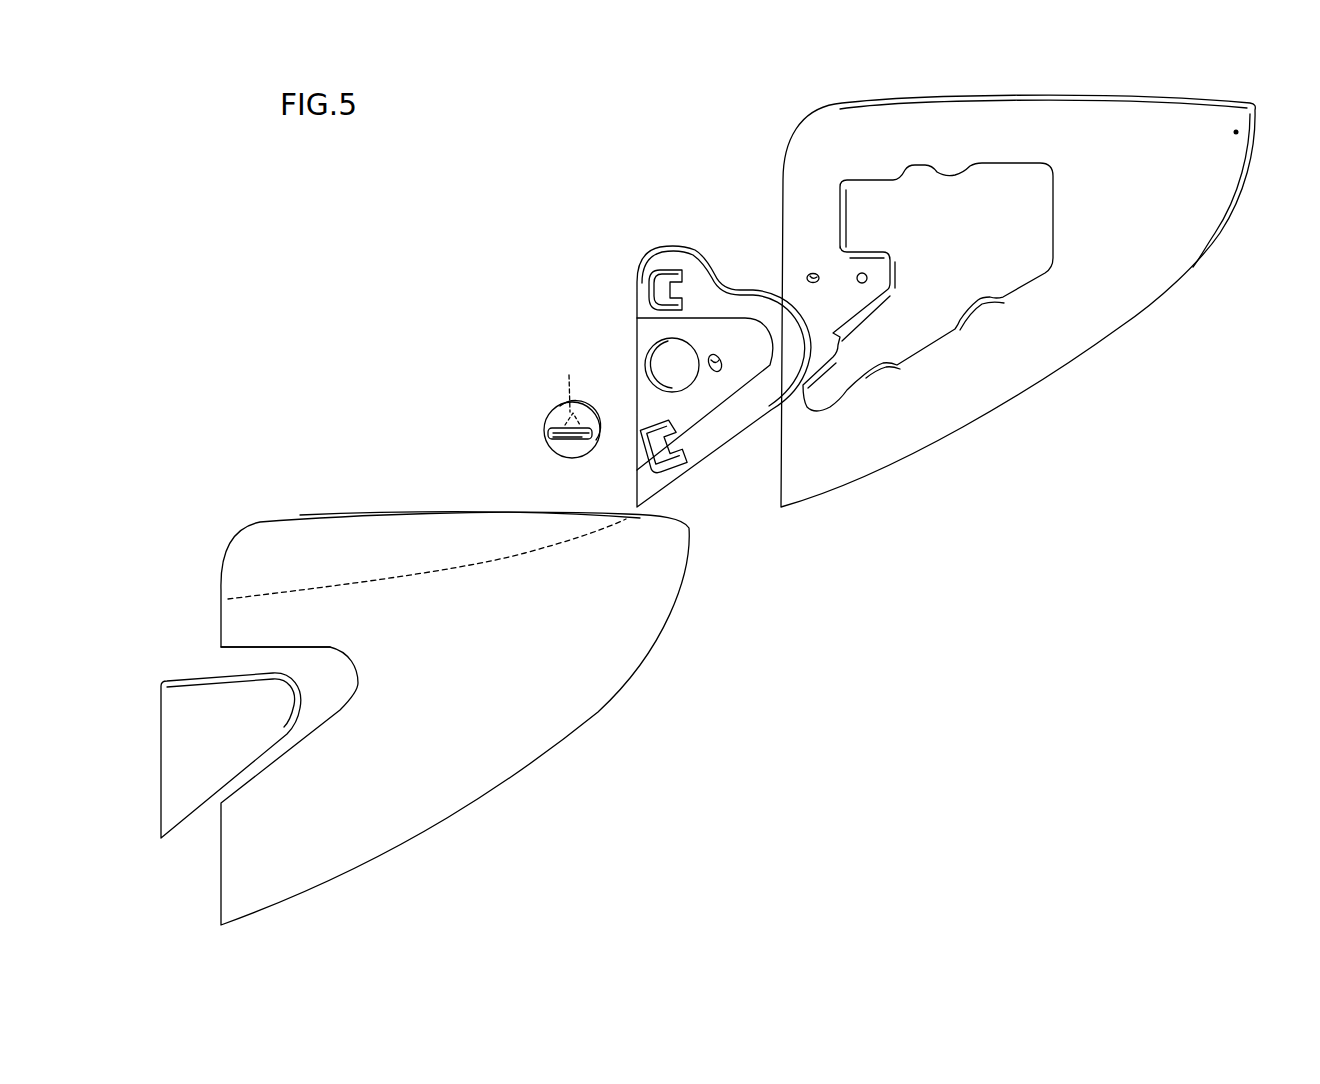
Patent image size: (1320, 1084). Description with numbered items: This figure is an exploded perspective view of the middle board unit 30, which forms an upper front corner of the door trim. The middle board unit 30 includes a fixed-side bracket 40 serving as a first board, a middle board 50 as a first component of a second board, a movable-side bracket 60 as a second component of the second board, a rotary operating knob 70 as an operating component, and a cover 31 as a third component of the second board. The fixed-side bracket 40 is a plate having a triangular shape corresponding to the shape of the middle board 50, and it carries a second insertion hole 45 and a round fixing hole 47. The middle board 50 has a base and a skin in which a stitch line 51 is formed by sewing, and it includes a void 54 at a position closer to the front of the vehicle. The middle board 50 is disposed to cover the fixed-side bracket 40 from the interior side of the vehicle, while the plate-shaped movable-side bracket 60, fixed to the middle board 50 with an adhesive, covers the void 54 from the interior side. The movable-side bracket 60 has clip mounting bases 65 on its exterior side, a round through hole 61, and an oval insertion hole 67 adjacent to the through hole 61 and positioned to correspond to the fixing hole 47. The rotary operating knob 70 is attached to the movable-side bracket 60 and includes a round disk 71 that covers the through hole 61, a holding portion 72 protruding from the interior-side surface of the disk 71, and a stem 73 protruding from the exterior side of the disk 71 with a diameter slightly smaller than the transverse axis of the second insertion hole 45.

The middle board unit 30 is at (381, 336).
The cover 31 is at (180, 710).
The fixed-side bracket 40 is at (1045, 365).
The second insertion hole 45 is at (812, 273).
The fixing hole 47 is at (863, 273).
The middle board 50 is at (556, 704).
The stitch line 51 is at (410, 581).
The void 54 is at (252, 648).
The movable-side bracket 60 is at (745, 307).
The through hole 61 is at (666, 348).
The clip mounting bases 65 is at (661, 271).
The insertion hole 67 is at (713, 372).
The rotary operating knob 70 is at (535, 366).
The disk 71 is at (567, 448).
The holding portion 72 is at (547, 434).
The stem 73 is at (569, 385).